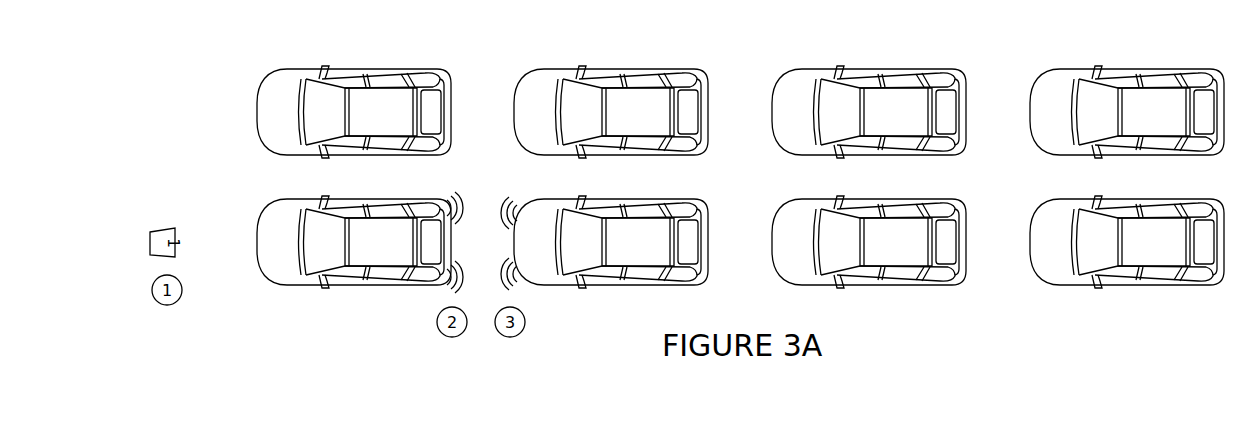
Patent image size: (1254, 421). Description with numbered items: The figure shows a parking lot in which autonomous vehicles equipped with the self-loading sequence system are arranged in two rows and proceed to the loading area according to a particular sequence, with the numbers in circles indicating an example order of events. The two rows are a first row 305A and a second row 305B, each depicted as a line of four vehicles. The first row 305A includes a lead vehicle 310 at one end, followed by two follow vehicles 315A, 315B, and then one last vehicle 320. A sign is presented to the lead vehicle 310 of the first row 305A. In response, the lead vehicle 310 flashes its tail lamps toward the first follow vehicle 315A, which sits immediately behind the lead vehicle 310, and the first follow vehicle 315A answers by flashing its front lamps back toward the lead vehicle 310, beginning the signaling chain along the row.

The first row 305A is at (210, 230).
The second row 305B is at (210, 105).
The lead vehicle 310 is at (378, 287).
The first follow vehicle 315A is at (618, 285).
The second follow vehicle 315B is at (862, 285).
The last vehicle 320 is at (1128, 285).